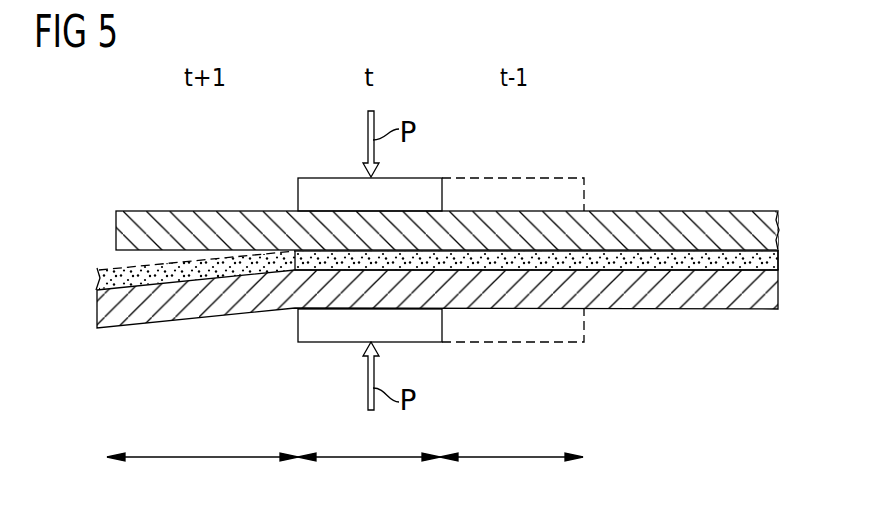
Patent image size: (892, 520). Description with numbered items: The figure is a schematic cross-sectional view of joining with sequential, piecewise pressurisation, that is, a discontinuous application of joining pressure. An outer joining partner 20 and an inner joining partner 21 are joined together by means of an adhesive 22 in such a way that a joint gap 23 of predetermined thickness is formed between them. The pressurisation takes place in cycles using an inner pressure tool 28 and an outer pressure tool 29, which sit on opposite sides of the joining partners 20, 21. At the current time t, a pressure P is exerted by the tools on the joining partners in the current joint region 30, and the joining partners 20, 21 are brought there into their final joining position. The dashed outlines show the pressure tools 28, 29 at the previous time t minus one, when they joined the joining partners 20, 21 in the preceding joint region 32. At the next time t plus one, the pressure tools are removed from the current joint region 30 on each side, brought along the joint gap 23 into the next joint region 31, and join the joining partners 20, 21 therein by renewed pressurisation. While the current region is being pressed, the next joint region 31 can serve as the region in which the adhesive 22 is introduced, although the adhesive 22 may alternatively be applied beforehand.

The outer joining partner 20 is at (727, 211).
The inner joining partner 21 is at (727, 309).
The adhesive 22 is at (97, 277).
The joint gap 23 is at (779, 259).
The inner pressure tool 28 is at (310, 343).
The outer pressure tool 29 is at (310, 177).
The current joint region 30 is at (369, 443).
The next joint region 31 is at (202, 443).
The preceding joint region 32 is at (511, 443).